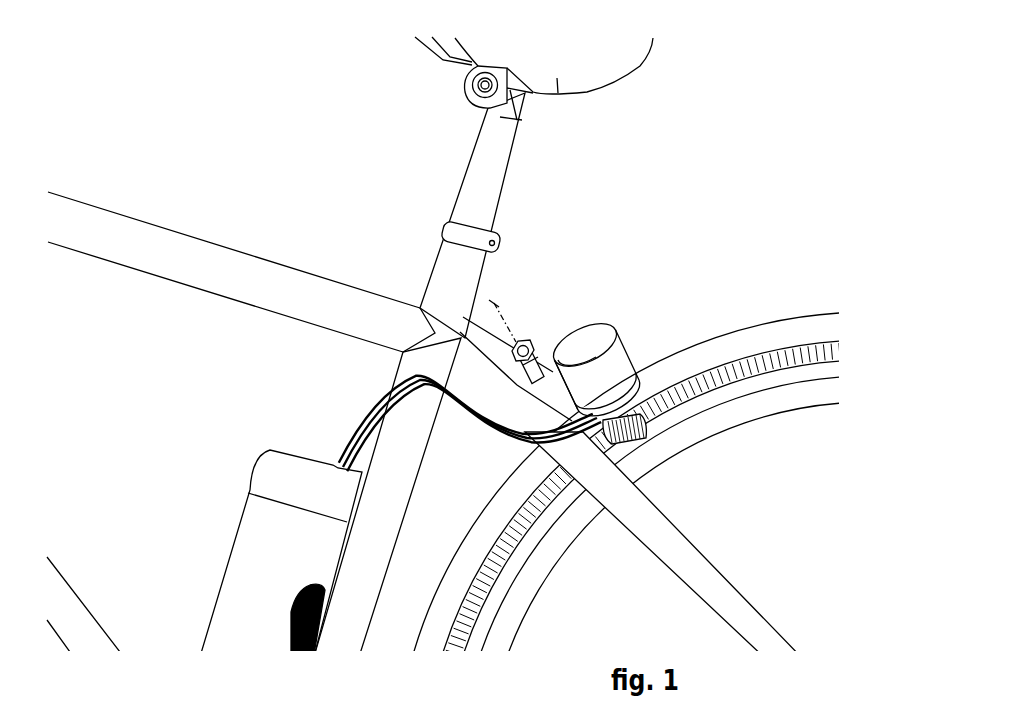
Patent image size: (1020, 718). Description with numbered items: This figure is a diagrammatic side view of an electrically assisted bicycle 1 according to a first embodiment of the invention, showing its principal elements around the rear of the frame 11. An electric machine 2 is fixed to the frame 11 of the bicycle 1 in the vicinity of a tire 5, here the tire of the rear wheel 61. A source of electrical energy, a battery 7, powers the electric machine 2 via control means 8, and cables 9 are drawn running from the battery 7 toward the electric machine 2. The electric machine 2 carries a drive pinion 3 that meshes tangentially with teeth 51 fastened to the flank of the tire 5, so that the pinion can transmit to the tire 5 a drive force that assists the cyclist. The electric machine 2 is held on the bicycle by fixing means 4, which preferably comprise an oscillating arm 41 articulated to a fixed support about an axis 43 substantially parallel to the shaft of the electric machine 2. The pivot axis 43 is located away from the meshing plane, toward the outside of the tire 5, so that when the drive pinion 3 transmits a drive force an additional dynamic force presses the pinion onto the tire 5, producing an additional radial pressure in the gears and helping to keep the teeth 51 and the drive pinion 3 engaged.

The electrically assisted bicycle 1 is at (425, 348).
The frame 11 is at (330, 278).
The battery 7 is at (246, 528).
The control means 8 is at (280, 477).
The cables 9 is at (360, 420).
The fixing means 4 is at (593, 312).
The oscillating arm 41 is at (548, 338).
The axis 43 is at (494, 303).
The electric machine 2 is at (616, 328).
The drive pinion 3 is at (647, 433).
The tire 5 is at (708, 340).
The teeth 51 is at (666, 378).
The rear wheel 61 is at (637, 440).